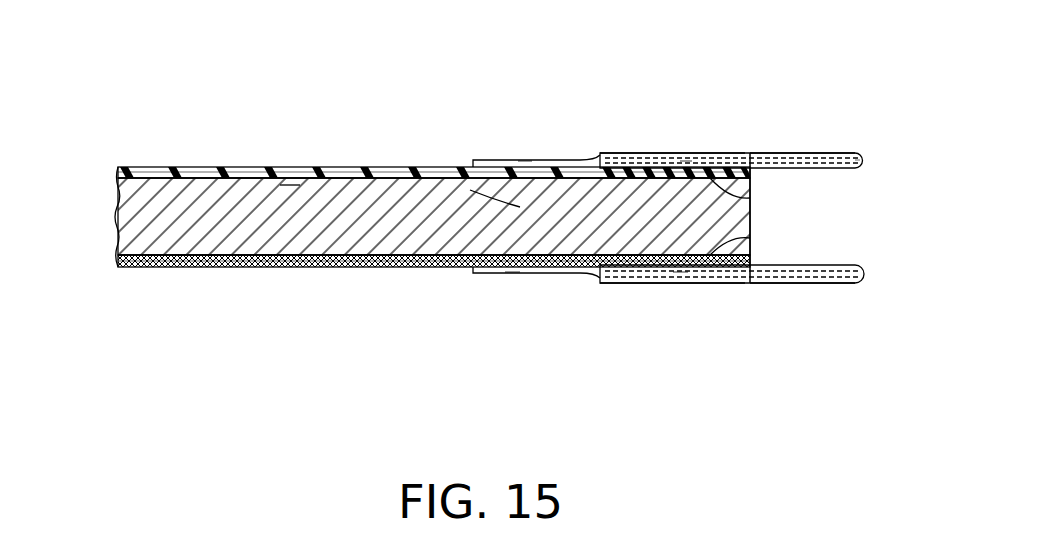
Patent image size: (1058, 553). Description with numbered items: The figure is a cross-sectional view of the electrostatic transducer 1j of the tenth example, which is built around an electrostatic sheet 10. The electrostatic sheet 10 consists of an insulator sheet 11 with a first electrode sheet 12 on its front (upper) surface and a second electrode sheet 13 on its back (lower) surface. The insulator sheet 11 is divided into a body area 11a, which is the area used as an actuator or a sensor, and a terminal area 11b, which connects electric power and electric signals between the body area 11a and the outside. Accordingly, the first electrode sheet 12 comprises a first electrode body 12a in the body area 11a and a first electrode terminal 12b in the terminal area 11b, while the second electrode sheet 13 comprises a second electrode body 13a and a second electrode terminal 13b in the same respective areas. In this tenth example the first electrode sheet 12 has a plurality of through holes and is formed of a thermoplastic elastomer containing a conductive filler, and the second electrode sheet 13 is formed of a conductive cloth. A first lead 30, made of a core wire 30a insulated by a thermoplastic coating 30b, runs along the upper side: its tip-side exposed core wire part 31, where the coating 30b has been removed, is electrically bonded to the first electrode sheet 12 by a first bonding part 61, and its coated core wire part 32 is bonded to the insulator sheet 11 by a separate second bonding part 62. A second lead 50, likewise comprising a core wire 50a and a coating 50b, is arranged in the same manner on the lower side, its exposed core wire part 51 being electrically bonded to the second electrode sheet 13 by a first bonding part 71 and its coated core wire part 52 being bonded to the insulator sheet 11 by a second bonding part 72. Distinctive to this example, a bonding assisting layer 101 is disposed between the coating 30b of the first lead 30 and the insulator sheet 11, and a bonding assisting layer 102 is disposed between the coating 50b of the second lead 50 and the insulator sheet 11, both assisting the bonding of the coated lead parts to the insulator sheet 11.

The transducer 1j is at (864, 108).
The electrostatic sheet 10 is at (120, 162).
The insulator sheet 11 is at (258, 192).
The body area 11a is at (297, 196).
The terminal area 11b is at (520, 207).
The first electrode sheet 12 is at (133, 166).
The first electrode body 12a is at (175, 167).
The first electrode terminal 12b is at (500, 168).
The second electrode sheet 13 is at (155, 268).
The second electrode body 13a is at (208, 268).
The second electrode terminal 13b is at (492, 273).
The first lead 30 is at (860, 50).
The core wire 30a is at (770, 155).
The coating 30b is at (845, 155).
The exposed core wire part 31 is at (553, 163).
The coated core wire part 32 is at (655, 156).
The second lead 50 is at (858, 388).
The core wire 50a is at (770, 285).
The coating 50b is at (843, 285).
The exposed core wire part 51 is at (545, 273).
The coated core wire part 52 is at (650, 284).
The first bonding part 61 is at (524, 160).
The second bonding part 62 is at (686, 166).
The first bonding part 71 is at (513, 275).
The second bonding part 72 is at (681, 268).
The bonding assisting layer 101 is at (715, 176).
The bonding assisting layer 102 is at (710, 258).